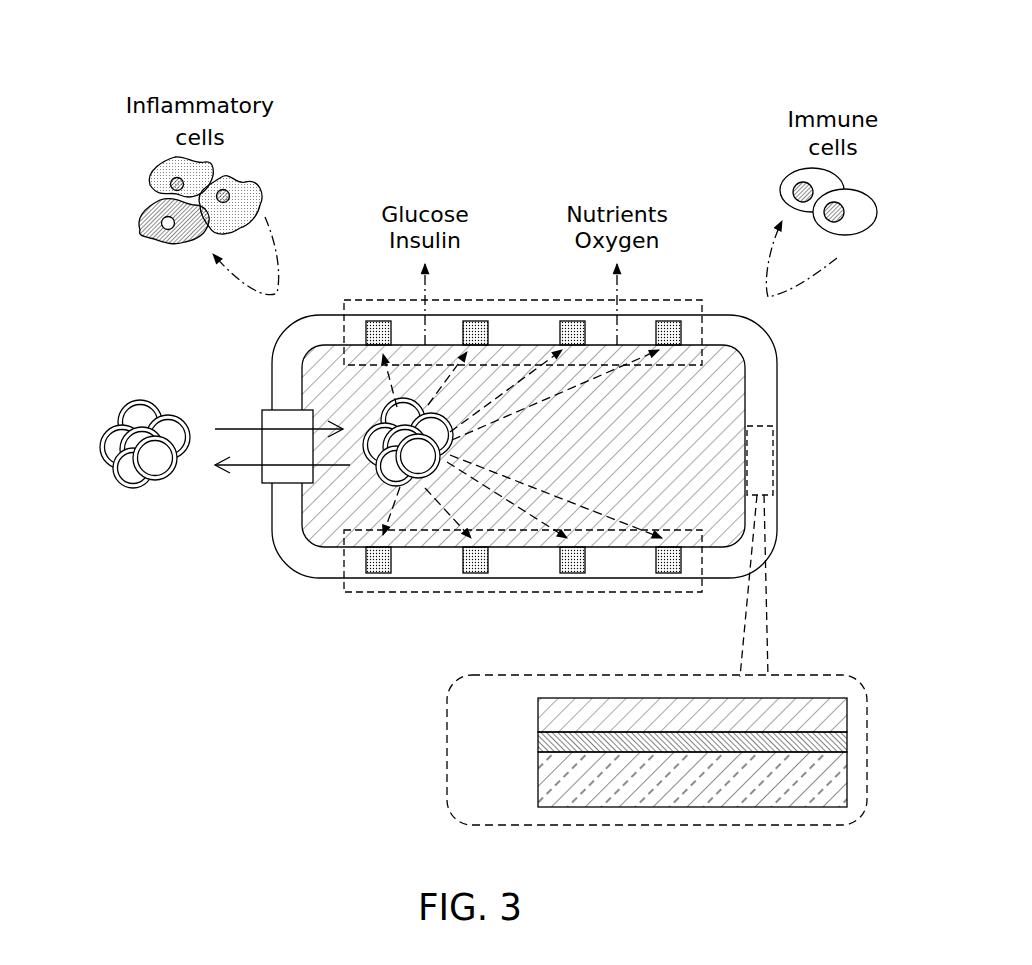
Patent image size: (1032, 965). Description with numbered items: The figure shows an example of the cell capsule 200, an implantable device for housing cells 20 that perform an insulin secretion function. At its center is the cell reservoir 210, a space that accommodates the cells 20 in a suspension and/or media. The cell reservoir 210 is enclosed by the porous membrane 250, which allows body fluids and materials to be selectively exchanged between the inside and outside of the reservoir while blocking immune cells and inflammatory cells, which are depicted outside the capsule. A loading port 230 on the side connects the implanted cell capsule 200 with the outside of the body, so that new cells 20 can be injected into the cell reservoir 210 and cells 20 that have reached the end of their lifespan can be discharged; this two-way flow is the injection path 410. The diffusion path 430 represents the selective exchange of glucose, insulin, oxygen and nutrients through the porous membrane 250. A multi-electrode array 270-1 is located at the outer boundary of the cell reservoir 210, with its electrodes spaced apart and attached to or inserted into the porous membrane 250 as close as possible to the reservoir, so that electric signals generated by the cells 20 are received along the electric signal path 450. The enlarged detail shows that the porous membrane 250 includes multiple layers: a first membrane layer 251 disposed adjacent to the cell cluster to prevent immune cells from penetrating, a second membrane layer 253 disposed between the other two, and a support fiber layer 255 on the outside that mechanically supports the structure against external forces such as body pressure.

The cell capsule 200 is at (786, 44).
The cells 20 is at (128, 396).
The cell reservoir 210 is at (730, 372).
The loading port 230 is at (262, 410).
The porous membrane 250 is at (757, 400).
The first membrane layer 251 is at (538, 714).
The second membrane layer 253 is at (538, 742).
The support fiber layer 255 is at (538, 780).
The multi-electrode array 270-1 is at (645, 300).
The injection path 410 is at (68, 673).
The diffusion path 430 is at (68, 712).
The electric signal path 450 is at (68, 750).